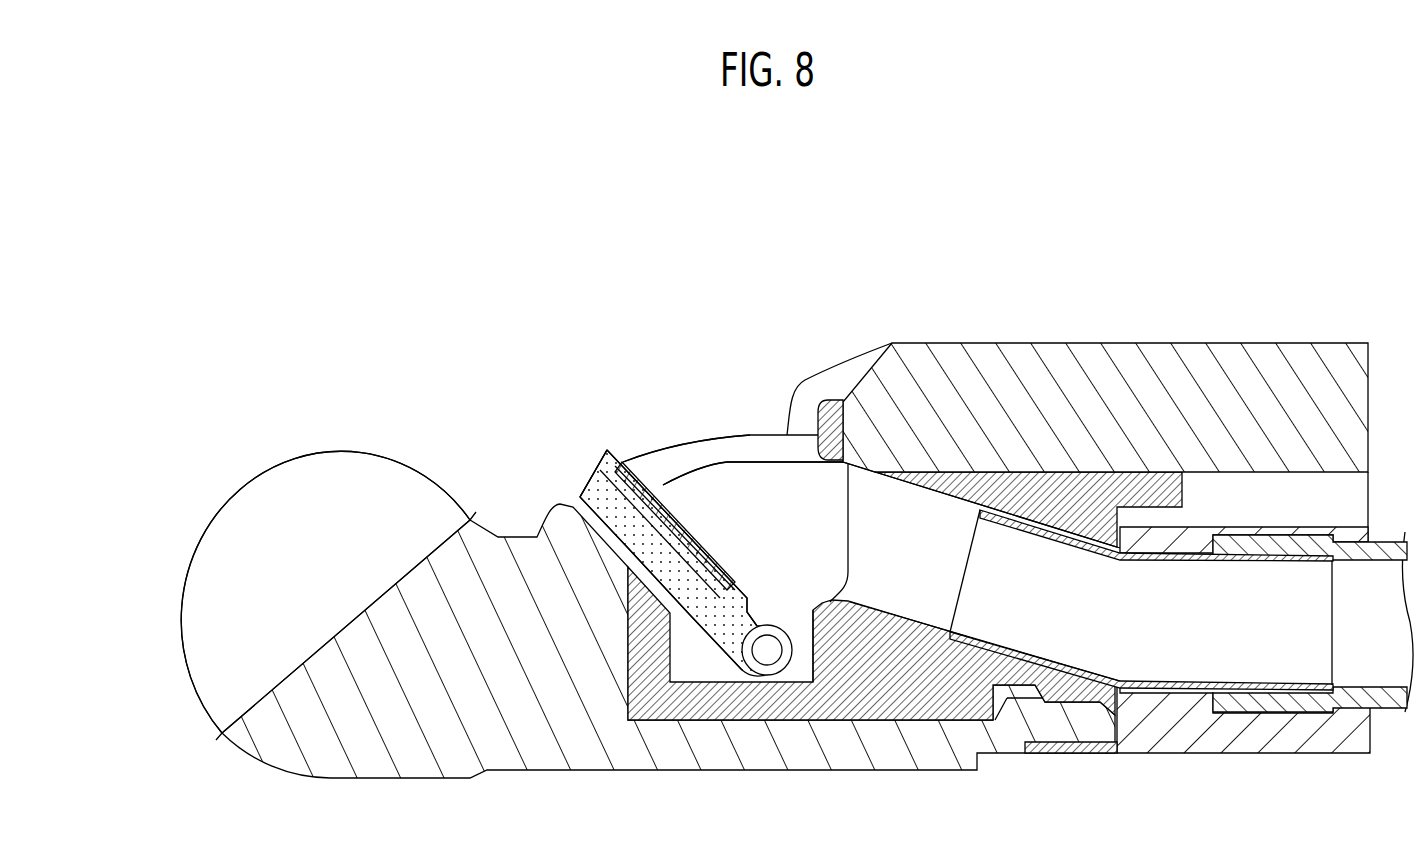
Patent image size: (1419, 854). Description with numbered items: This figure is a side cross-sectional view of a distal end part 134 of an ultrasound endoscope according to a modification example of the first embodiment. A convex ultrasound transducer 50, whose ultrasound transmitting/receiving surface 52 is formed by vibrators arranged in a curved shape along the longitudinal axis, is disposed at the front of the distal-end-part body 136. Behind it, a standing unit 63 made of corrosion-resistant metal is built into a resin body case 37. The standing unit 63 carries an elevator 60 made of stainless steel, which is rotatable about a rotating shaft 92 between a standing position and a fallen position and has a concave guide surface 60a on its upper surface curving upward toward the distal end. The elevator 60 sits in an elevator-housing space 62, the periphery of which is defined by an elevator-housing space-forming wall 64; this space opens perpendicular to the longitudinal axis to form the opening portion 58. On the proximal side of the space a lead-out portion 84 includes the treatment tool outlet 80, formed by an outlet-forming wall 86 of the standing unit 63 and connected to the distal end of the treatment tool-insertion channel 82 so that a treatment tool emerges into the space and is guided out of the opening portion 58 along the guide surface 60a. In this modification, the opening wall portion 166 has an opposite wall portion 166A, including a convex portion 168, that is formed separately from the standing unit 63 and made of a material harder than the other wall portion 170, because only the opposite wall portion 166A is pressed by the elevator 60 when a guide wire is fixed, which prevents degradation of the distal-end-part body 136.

The body case 37 is at (543, 757).
The ultrasound transducer 50 is at (150, 592).
The ultrasound transmitting/receiving surface 52 is at (240, 488).
The opening portion 58 is at (670, 443).
The elevator 60 is at (568, 483).
The guide surface 60a is at (632, 462).
The elevator-housing space 62 is at (725, 480).
The standing unit 63 is at (643, 477).
The elevator-housing space-forming wall 64 is at (730, 490).
The treatment tool outlet 80 is at (847, 538).
The treatment tool-insertion channel 82 is at (1092, 643).
The lead-out portion 84 is at (802, 620).
The outlet-forming wall 86 is at (933, 523).
The rotating shaft 92 is at (767, 660).
The distal end part 134 is at (1266, 288).
The distal-end-part body 136 is at (1159, 333).
The opening wall portion 166 is at (690, 490).
The opposite wall portion 166A is at (827, 380).
The convex portion 168 is at (836, 398).
The other wall portion 170 is at (749, 404).